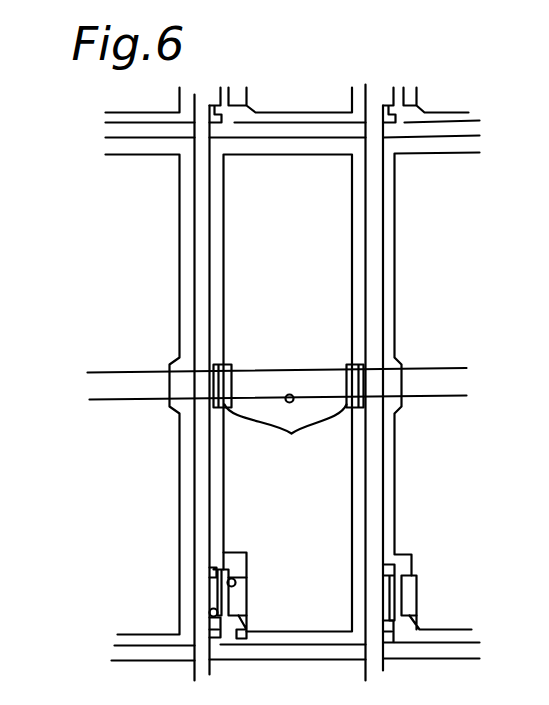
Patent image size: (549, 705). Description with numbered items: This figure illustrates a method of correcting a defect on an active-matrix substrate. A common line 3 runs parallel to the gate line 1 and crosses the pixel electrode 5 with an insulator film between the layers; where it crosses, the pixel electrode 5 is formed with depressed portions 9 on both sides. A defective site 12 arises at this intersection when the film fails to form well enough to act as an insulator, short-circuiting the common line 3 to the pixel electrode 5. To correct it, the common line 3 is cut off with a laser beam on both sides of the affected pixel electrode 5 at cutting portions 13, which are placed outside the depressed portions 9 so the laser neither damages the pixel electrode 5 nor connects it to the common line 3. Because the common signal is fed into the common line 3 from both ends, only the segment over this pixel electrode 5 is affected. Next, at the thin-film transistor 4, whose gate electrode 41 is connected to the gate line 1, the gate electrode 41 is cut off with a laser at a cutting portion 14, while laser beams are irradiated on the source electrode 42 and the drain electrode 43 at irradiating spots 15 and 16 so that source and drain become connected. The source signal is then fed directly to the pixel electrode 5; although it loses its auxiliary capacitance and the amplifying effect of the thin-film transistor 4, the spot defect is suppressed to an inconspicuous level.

The gate line 1 is at (115, 649).
The common line 3 is at (103, 385).
The thin-film transistor 4 is at (219, 562).
The pixel electrode 5 is at (347, 473).
The depressed portion 9 is at (286, 437).
The defective site 12 is at (289, 392).
The cutting portion 13 is at (214, 362).
The cutting portion 14 is at (249, 629).
The irradiating spot 15 is at (210, 609).
The irradiating spot 16 is at (224, 566).
The gate electrode 41 is at (236, 549).
The source electrode 42 is at (212, 578).
The drain electrode 43 is at (249, 586).